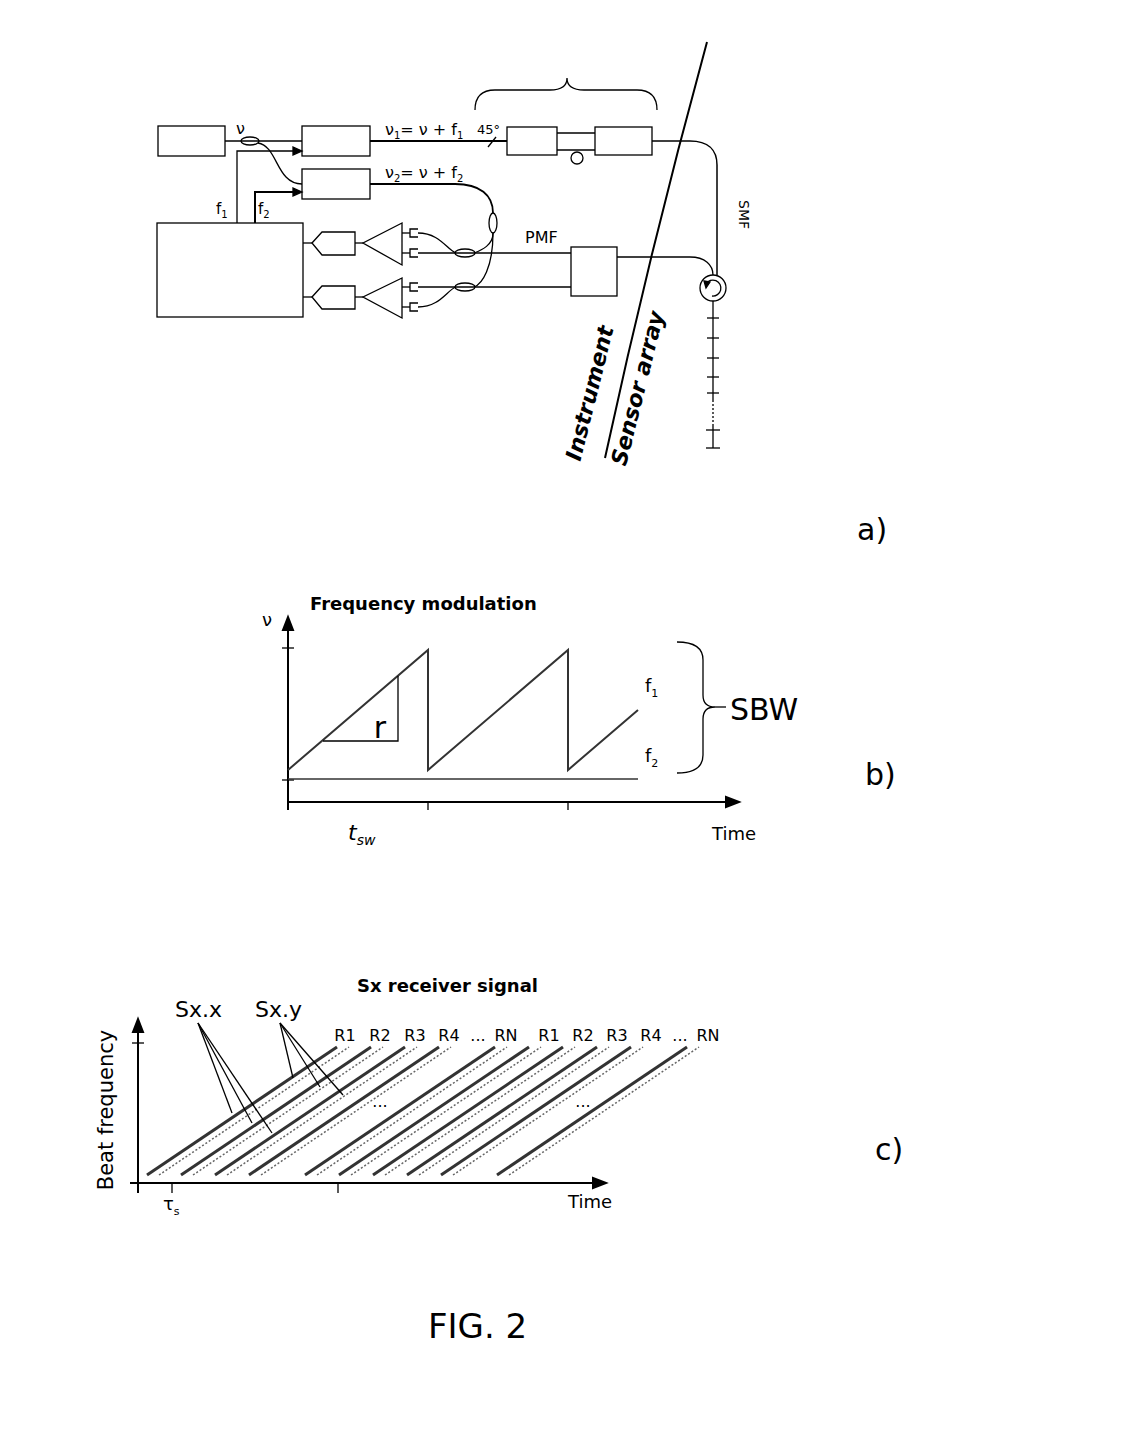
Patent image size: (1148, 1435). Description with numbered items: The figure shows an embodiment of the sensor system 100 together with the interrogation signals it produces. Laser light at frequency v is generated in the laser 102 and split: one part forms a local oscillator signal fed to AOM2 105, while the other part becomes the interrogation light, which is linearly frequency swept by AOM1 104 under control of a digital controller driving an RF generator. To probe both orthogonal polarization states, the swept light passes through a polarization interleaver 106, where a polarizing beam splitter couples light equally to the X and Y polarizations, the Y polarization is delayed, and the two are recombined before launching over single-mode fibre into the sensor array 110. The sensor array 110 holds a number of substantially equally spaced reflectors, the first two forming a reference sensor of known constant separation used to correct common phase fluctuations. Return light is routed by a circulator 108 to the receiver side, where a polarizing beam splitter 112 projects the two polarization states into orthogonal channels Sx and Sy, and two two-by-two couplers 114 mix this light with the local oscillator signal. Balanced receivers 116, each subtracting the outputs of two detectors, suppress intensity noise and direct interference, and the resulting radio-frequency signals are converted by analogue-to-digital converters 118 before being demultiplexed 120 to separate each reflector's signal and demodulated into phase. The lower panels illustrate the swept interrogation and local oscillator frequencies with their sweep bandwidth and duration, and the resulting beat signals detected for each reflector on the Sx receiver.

The sensor system 100 is at (766, 56).
The laser 102 is at (190, 126).
The AOM1 104 is at (337, 126).
The AOM2 105 is at (337, 170).
The polarization interleaver 106 is at (567, 78).
The circulator 108 is at (730, 285).
The sensor array 110 is at (785, 313).
The polarizing beam splitter 112 is at (595, 296).
The 2×2 couplers 114 is at (493, 233).
The receiver 116 is at (397, 240).
The analog-to-digital converters 118 is at (340, 255).
The demultiplexer 120 is at (230, 317).